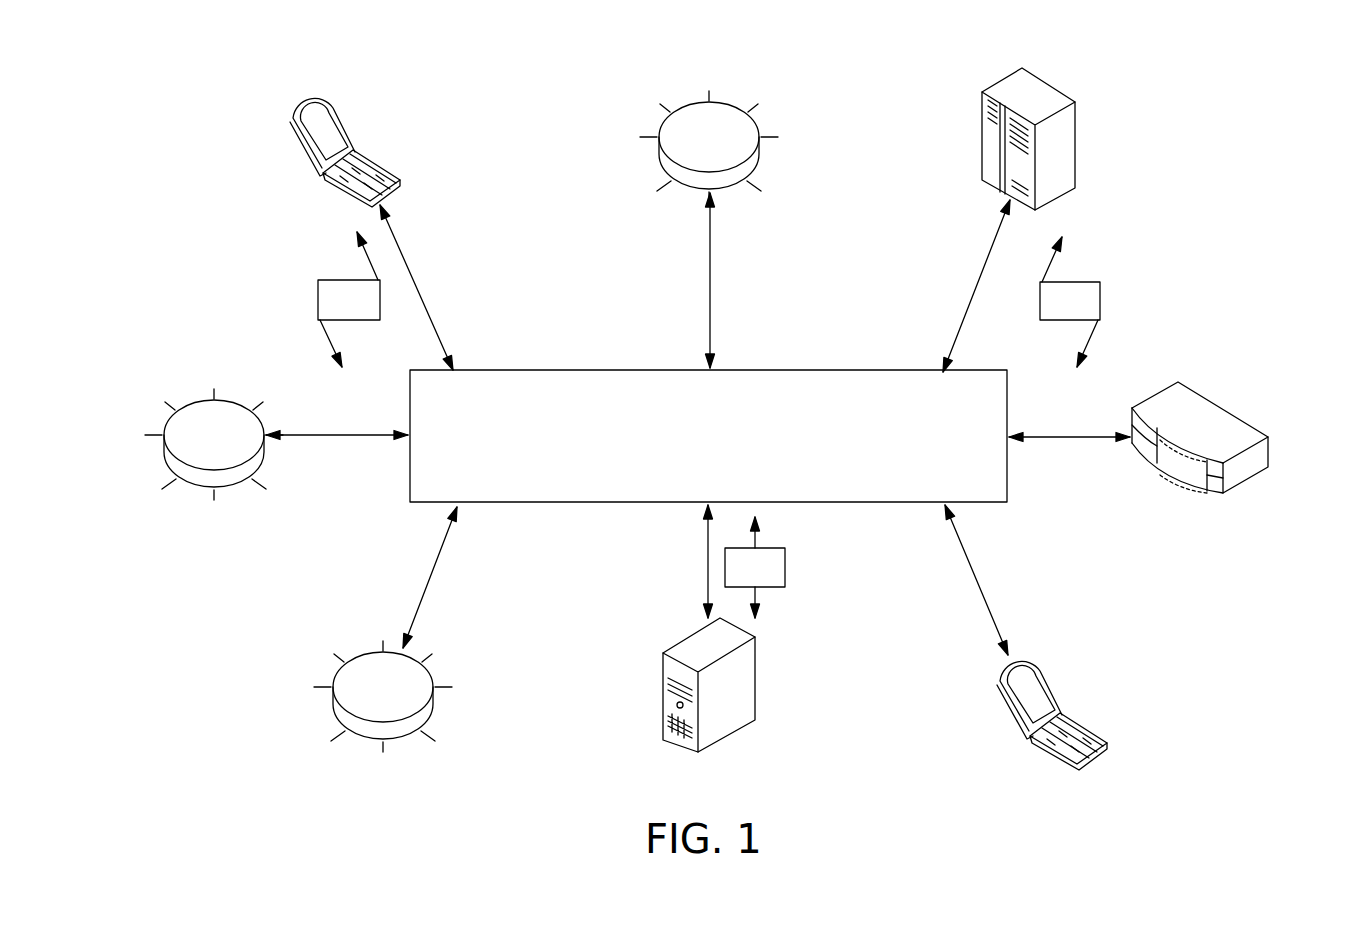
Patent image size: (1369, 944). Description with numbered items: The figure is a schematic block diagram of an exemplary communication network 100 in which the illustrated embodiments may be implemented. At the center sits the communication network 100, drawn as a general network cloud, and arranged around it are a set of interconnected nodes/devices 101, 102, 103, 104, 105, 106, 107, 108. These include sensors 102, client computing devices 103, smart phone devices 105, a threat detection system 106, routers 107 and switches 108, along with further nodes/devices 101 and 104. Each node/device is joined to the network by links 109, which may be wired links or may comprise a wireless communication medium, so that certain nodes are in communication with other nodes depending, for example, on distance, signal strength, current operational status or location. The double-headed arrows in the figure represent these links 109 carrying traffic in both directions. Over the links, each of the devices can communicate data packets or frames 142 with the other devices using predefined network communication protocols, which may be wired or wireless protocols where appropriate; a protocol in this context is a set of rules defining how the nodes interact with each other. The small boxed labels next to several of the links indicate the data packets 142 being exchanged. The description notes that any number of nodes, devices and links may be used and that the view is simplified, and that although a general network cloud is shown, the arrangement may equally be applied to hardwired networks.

The communication network 100 is at (732, 484).
The node/device 101 is at (380, 167).
The sensor 102 is at (760, 127).
The client computing device 103 is at (1075, 145).
The node/device 104 is at (1223, 407).
The smart phone device 105 is at (1087, 728).
The threat detection system 106 is at (750, 723).
The router 107 is at (357, 733).
The switch 108 is at (232, 483).
The link 109 is at (437, 325).
The data packet 142 is at (709, 425).